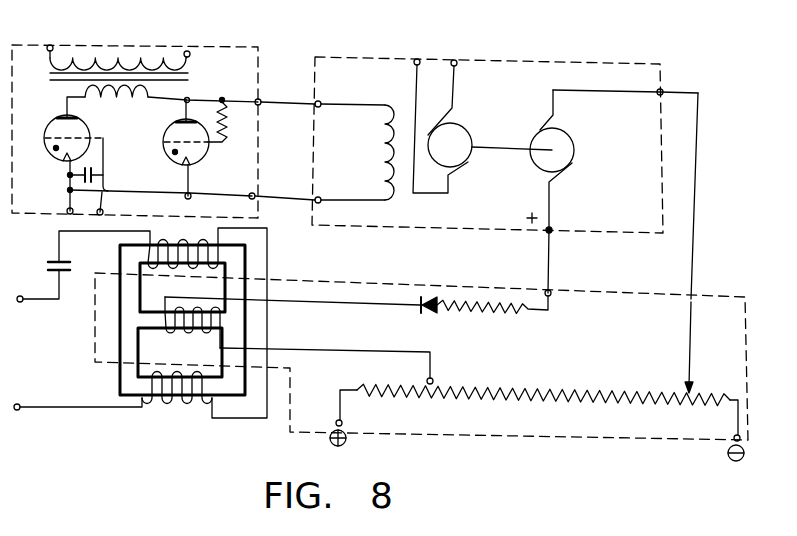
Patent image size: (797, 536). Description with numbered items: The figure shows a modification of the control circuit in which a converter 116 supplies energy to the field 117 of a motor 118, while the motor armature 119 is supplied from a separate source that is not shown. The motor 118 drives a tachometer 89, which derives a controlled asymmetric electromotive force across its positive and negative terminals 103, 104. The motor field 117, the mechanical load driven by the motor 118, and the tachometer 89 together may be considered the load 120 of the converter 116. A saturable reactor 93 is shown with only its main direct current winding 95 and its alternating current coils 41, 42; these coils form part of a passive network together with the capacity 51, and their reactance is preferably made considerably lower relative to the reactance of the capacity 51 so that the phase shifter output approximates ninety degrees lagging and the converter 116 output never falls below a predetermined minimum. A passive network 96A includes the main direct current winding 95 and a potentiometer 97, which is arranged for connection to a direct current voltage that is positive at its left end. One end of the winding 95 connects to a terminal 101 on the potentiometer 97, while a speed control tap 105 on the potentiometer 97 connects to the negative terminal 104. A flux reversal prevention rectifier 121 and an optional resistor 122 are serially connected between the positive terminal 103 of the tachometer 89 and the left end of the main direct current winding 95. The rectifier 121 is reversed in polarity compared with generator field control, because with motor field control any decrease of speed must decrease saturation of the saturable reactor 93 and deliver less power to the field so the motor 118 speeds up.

The converter 116 is at (191, 50).
The load 120 is at (518, 62).
The field 117 is at (385, 127).
The motor 118 is at (440, 126).
The motor armature 119 is at (466, 136).
The tachometer 89 is at (572, 148).
The negative terminal 104 is at (660, 96).
The positive terminal 103 is at (550, 229).
The capacity 51 is at (55, 262).
The saturable reactor 93 is at (223, 396).
The alternating current coil 41 is at (164, 245).
The alternating current coil 42 is at (178, 401).
The main direct current winding 95 is at (217, 320).
The flux reversal prevention rectifier 121 is at (420, 312).
The resistor 122 is at (506, 318).
The terminal 101 is at (433, 378).
The potentiometer 97 is at (522, 386).
The speed control tap 105 is at (686, 387).
The passive network 96A is at (509, 452).